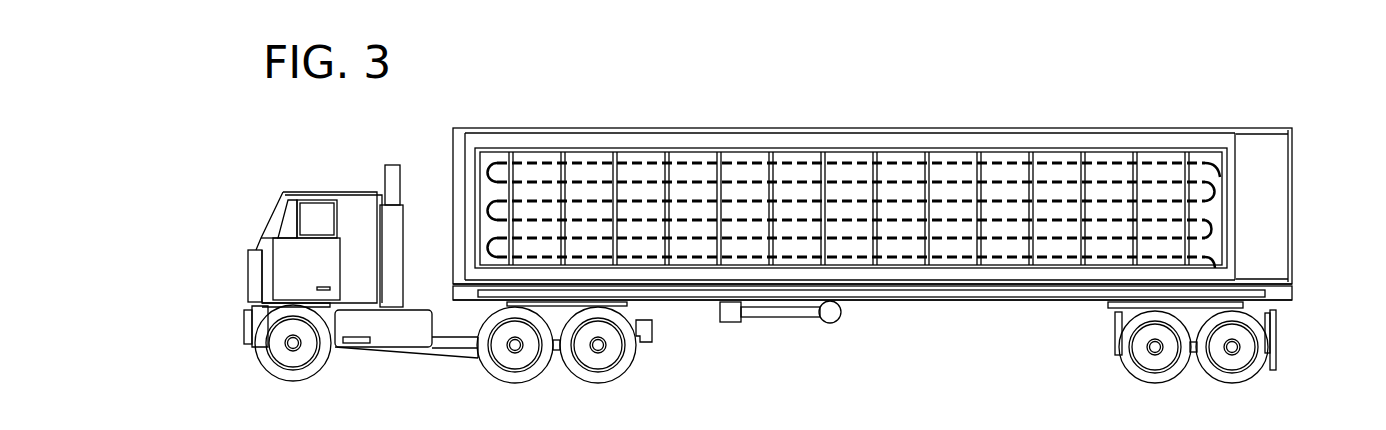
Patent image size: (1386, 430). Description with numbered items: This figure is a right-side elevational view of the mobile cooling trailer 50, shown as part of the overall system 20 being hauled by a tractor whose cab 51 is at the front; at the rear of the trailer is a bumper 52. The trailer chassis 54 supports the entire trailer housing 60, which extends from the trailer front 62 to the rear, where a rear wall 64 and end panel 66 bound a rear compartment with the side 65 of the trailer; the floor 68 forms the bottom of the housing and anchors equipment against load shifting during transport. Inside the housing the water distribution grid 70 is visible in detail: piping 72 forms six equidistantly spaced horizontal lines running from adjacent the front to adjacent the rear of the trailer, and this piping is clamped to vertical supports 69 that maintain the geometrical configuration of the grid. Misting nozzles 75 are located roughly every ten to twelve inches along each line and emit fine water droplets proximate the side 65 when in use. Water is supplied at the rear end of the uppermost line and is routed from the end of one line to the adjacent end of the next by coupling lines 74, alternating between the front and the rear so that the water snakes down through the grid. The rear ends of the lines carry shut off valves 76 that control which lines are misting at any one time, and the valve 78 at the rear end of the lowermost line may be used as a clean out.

The mobile heat exchange system 20 is at (847, 73).
The mobile cooling trailer 50 is at (477, 113).
The tractor cab 51 is at (322, 192).
The rear bumper 52 is at (1275, 343).
The trailer chassis 54 is at (1292, 291).
The trailer housing 60 is at (1113, 113).
The trailer front 62 is at (452, 153).
The rear interior wall 64 is at (1229, 128).
The side 65 is at (1278, 235).
The rear end wall 66 is at (1293, 152).
The trailer floor 68 is at (1003, 300).
The vertical supports 69 is at (666, 152).
The water distribution grid 70 is at (752, 154).
The piping 72 is at (918, 182).
The coupling line 74 is at (487, 160).
The misting nozzles 75 is at (848, 160).
The shut off valve 76 is at (1215, 221).
The valve 78 is at (1207, 254).